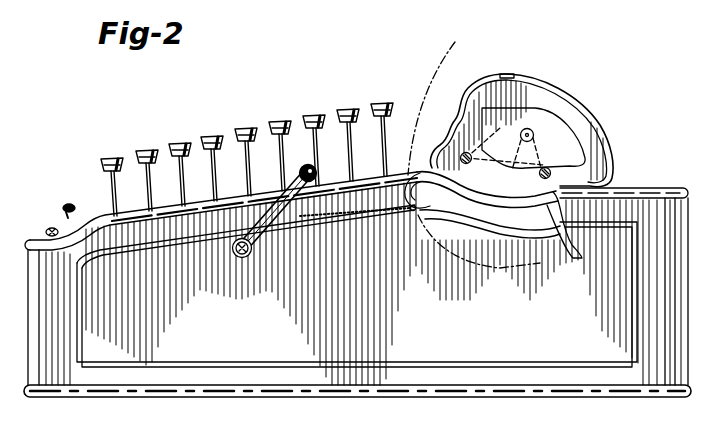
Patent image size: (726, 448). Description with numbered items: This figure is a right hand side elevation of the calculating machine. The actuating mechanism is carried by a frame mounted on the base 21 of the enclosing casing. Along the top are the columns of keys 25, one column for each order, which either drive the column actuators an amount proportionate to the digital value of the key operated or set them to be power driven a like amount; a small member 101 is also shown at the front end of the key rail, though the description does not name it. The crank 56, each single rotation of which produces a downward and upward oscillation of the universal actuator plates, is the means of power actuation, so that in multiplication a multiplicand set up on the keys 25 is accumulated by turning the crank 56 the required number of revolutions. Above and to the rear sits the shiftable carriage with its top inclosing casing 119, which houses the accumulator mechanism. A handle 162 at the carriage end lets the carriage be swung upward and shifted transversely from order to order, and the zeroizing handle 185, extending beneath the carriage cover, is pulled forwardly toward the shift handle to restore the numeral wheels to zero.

The base 21 is at (320, 384).
The keys 25 is at (177, 152).
The crank 56 is at (270, 240).
The stop member 101 is at (61, 208).
The top inclosing casing 119 is at (600, 122).
The handle 162 is at (411, 211).
The zeroizing handle 185 is at (560, 246).